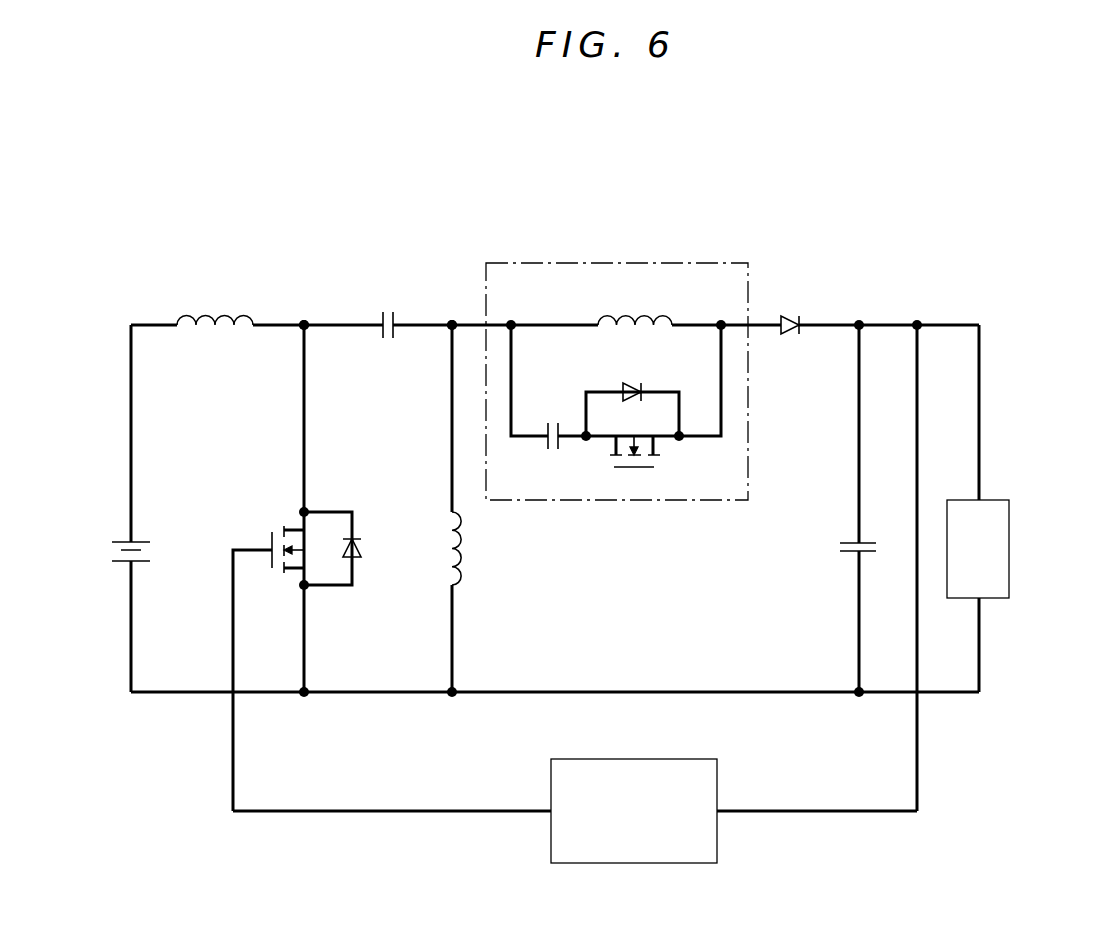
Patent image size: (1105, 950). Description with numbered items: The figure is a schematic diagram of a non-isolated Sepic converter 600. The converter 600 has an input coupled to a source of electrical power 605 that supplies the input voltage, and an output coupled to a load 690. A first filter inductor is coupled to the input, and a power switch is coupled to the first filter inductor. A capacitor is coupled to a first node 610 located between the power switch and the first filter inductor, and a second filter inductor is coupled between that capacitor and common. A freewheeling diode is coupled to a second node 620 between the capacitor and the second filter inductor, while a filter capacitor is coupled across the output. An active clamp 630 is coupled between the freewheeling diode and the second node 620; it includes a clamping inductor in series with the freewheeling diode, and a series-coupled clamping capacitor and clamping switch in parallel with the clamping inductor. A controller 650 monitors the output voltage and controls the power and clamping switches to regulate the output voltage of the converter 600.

The non-isolated Sepic converter 600 is at (703, 166).
The source of electrical power 605 is at (152, 549).
The first node 610 is at (304, 318).
The second node 620 is at (452, 318).
The active clamp 630 is at (616, 262).
The controller 650 is at (633, 864).
The load 690 is at (1010, 552).